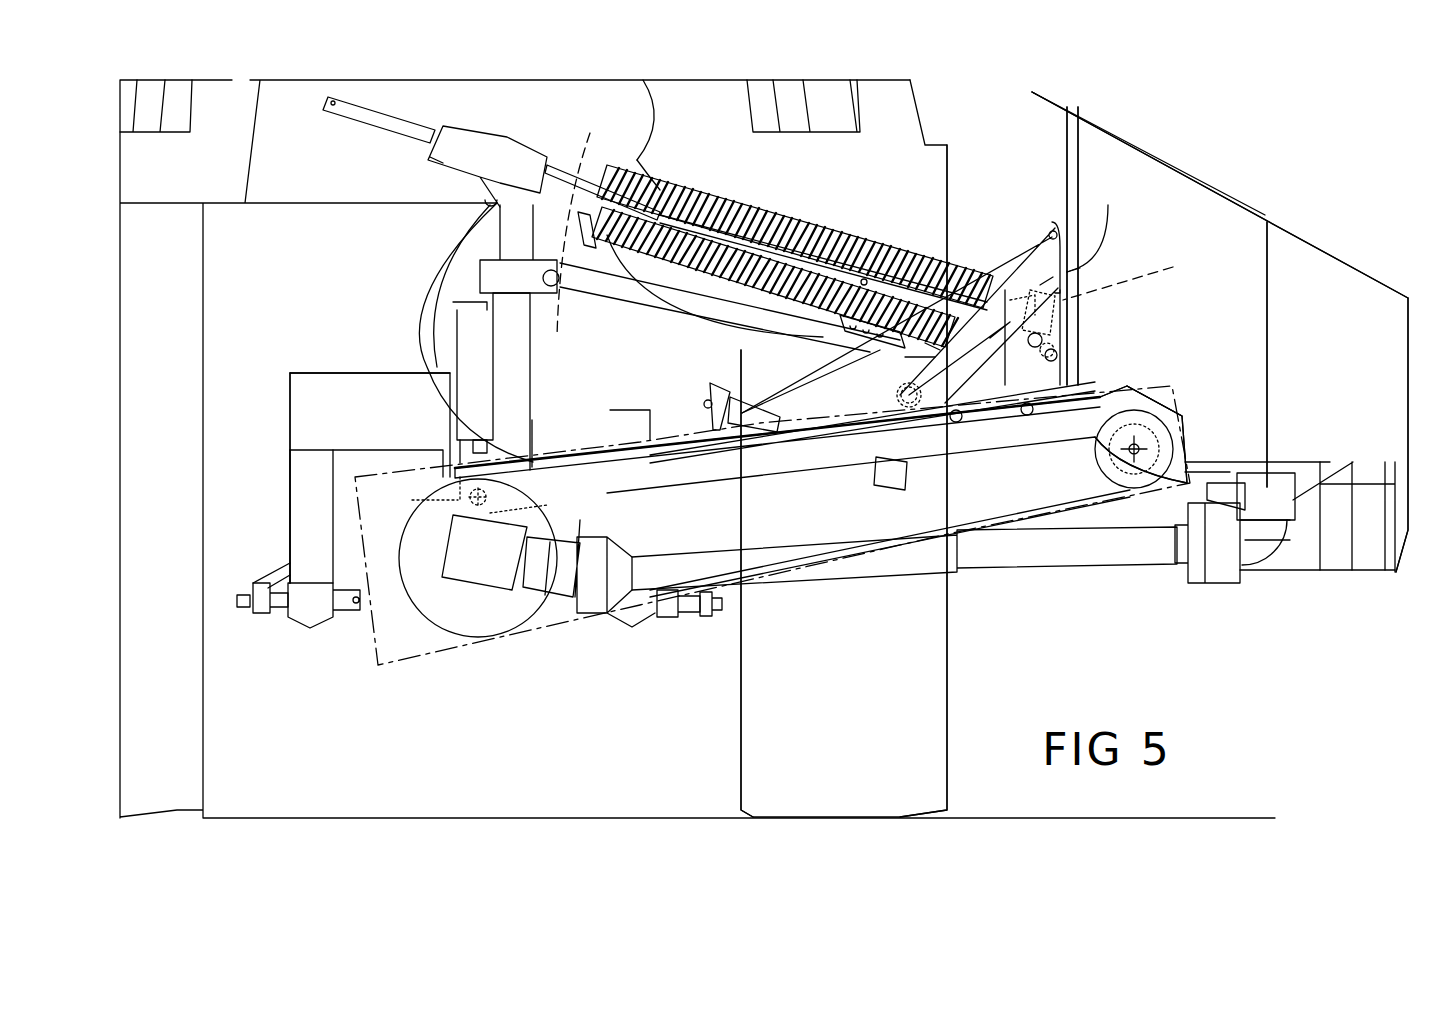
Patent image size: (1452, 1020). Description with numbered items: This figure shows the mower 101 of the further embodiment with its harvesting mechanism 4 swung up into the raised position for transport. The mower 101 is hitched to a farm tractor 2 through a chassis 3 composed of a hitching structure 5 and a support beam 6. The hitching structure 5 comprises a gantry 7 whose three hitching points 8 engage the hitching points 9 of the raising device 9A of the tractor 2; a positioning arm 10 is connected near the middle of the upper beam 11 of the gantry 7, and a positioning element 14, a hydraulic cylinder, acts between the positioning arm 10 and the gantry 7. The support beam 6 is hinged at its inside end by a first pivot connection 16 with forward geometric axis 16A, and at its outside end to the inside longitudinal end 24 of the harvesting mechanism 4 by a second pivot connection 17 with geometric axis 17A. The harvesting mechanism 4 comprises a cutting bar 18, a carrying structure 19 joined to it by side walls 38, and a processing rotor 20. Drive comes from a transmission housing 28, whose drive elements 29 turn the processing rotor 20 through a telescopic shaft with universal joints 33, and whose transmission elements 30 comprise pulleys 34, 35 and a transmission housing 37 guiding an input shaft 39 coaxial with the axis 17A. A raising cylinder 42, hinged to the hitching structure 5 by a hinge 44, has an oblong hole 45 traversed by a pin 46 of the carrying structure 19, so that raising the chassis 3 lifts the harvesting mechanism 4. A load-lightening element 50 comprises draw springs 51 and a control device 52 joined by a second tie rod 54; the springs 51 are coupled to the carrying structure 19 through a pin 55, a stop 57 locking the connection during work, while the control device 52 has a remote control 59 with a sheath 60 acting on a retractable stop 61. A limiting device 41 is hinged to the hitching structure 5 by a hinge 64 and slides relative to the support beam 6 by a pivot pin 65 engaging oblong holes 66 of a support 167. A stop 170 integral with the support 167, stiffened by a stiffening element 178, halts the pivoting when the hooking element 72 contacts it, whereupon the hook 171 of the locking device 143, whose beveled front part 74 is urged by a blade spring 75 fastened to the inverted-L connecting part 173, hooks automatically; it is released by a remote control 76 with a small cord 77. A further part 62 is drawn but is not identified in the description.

The farm tractor 2 is at (223, 95).
The chassis 3 is at (297, 410).
The harvesting mechanism 4 is at (1342, 268).
The hitching structure 5 is at (297, 513).
The support beam 6 is at (845, 460).
The gantry 7 is at (310, 380).
The hitching points 8 is at (243, 613).
The hitching points 9 is at (237, 587).
The raising device 9A is at (277, 567).
The positioning arm 10 is at (460, 427).
The upper beam 11 is at (290, 425).
The positioning element 14 is at (603, 413).
The first pivot connection 16 is at (457, 497).
The geometric axis 16A is at (498, 517).
The second pivot connection 17 is at (1160, 385).
The geometric axis 17A is at (1134, 448).
The cutting bar 18 is at (1405, 537).
The carrying structure 19 is at (1067, 122).
The processing rotor 20 is at (1270, 433).
The inside longitudinal end 24 is at (1382, 562).
The transmission housing 28 is at (505, 600).
The drive elements 29 is at (1060, 565).
The transmission elements 30 is at (947, 520).
The telescopic shaft with universal joints 33 is at (778, 598).
The pulley 34 is at (427, 587).
The pulley 35 is at (1162, 447).
The transmission housing 37 is at (1124, 482).
The side walls 38 is at (1320, 562).
The input shaft 39 is at (1163, 393).
The limiting device 41 is at (627, 313).
The raising cylinder 42 is at (603, 277).
The hinge 44 is at (592, 220).
The oblong hole 45 is at (1027, 413).
The pin 46 is at (1073, 350).
The load-lightening element 50 is at (825, 210).
The draw spring 51 is at (790, 220).
The control device 52 is at (493, 152).
The second tie rod 54 is at (590, 160).
The pin 55 is at (1060, 337).
The stop 57 is at (882, 257).
The remote control 59 is at (457, 250).
The sheath 60 is at (430, 302).
The retractable stop 61 is at (485, 190).
The stop bracket 62 is at (728, 385).
The hinge 64 is at (523, 381).
The pivot pin 65 is at (957, 417).
The oblong hole 66 is at (868, 453).
The hooking element 72 is at (1053, 277).
The front part 74 is at (1102, 223).
The blade spring 75 is at (827, 385).
The remote control 76 is at (653, 108).
The small cord 77 is at (653, 157).
The mower 101 is at (1138, 148).
The locking device 143 is at (1080, 268).
The support 167 is at (823, 412).
The stop 170 is at (1148, 273).
The hook 171 is at (1052, 235).
The connecting part 173 is at (896, 357).
The stiffening element 178 is at (950, 390).